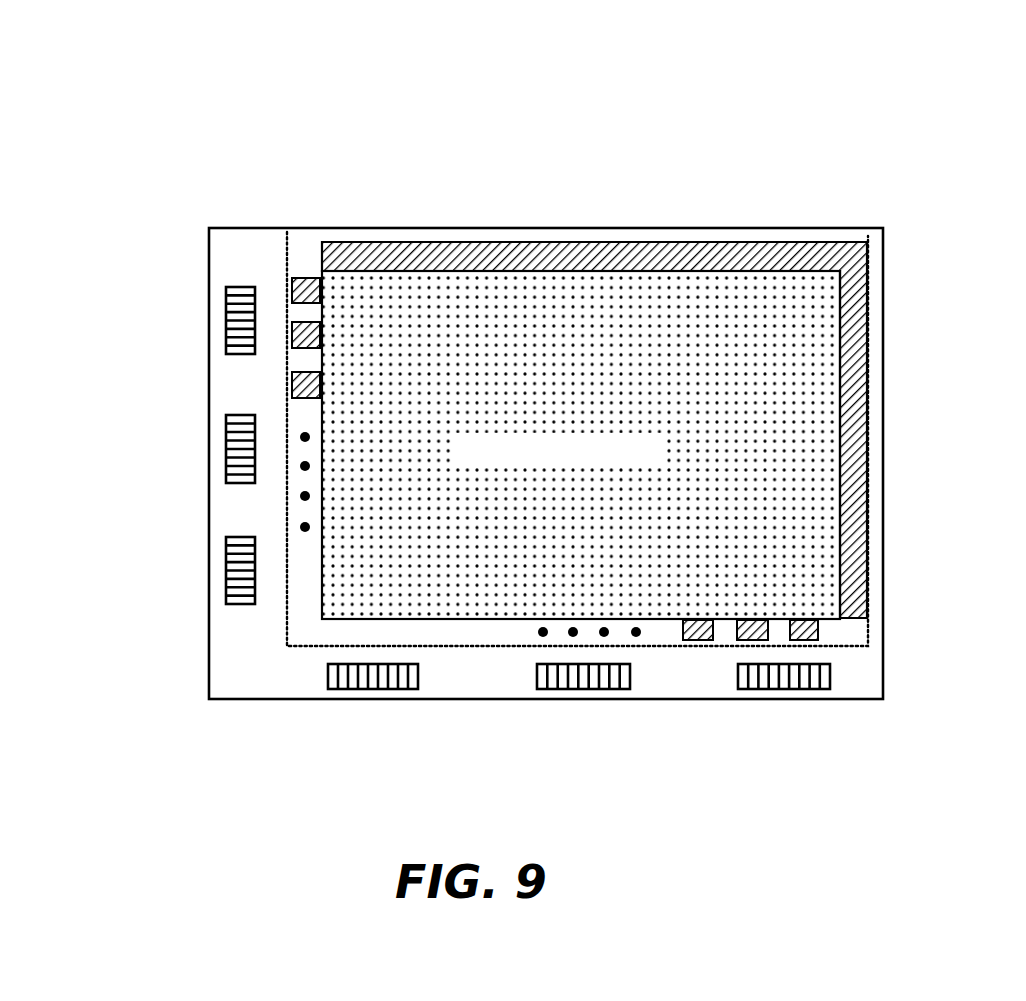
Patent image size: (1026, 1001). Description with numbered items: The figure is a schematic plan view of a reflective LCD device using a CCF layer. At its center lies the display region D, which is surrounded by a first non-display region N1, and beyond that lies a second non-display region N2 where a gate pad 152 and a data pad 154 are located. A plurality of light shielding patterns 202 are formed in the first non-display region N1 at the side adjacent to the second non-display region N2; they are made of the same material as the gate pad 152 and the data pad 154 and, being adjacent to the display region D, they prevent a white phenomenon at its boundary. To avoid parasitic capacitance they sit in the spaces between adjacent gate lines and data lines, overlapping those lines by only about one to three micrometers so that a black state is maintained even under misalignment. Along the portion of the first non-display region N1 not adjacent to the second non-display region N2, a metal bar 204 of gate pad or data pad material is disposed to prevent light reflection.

The gate pad 152 is at (250, 312).
The data pad 154 is at (373, 675).
The light shielding patterns 202 is at (700, 640).
The metal bar 204 is at (770, 247).
The first non-display region N1 is at (612, 235).
The second non-display region N2 is at (258, 252).
The display region D is at (542, 292).